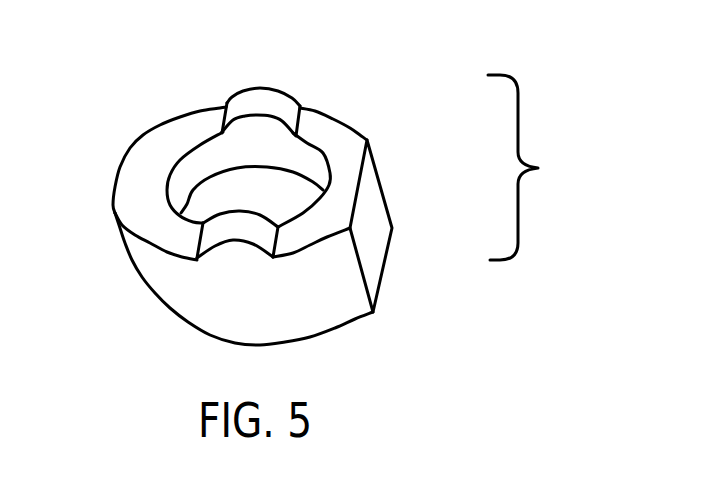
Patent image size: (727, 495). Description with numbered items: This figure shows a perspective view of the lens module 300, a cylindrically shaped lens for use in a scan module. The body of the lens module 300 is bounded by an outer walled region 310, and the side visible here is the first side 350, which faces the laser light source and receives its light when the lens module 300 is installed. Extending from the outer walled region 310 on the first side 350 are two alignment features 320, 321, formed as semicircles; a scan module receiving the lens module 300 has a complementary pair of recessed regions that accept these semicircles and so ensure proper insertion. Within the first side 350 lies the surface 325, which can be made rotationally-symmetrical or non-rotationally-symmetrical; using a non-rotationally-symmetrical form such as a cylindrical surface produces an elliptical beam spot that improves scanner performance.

The lens module 300 is at (263, 313).
The outer walled region 310 is at (342, 143).
The alignment feature 320 is at (263, 105).
The alignment feature 321 is at (228, 252).
The surface 325 is at (223, 192).
The first side 350 is at (555, 167).